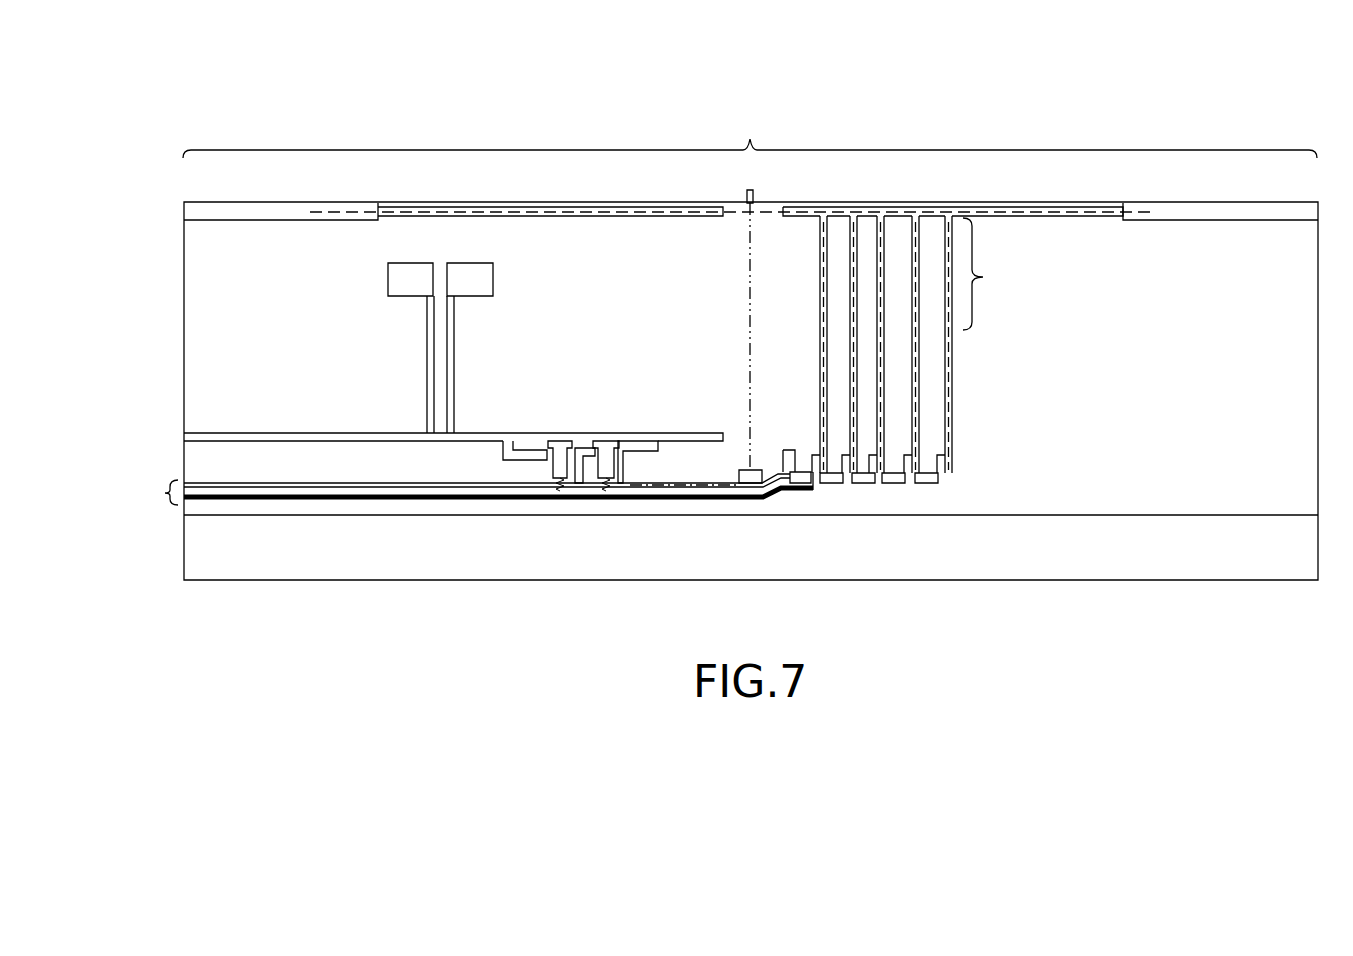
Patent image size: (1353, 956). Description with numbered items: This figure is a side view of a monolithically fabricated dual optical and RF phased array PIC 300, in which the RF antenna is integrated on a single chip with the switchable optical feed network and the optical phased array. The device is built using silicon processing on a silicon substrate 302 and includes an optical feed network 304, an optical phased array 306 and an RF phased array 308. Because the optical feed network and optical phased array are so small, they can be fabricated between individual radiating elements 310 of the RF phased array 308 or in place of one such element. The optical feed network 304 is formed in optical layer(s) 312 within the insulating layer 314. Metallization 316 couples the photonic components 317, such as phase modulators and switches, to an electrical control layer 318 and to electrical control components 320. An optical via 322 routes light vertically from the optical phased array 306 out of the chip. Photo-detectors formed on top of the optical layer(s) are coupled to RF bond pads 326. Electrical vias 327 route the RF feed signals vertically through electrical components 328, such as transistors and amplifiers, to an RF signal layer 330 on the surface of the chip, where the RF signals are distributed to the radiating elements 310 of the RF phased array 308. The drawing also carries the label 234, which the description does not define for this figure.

The dual optical and RF phased array PIC 300 is at (188, 108).
The silicon substrate 302 is at (182, 541).
The optical feed network 304 is at (432, 473).
The optical phased array 306 is at (738, 475).
The RF phased array 308 is at (750, 131).
The radiating elements 310 is at (183, 202).
The optical layer(s) 312 is at (466, 488).
The insulating layer 314 is at (279, 357).
The metallization 316 is at (545, 472).
The photonic components 317 is at (602, 466).
The electrical control layer 318 is at (402, 432).
The electrical control components 320 is at (493, 283).
The optical via 322 is at (752, 385).
The RF bond pads 326 is at (955, 457).
The electrical vias 327 is at (954, 378).
The electrical components 328 is at (953, 340).
The RF signal layer 330 is at (608, 216).
The contact pad 234 is at (893, 478).